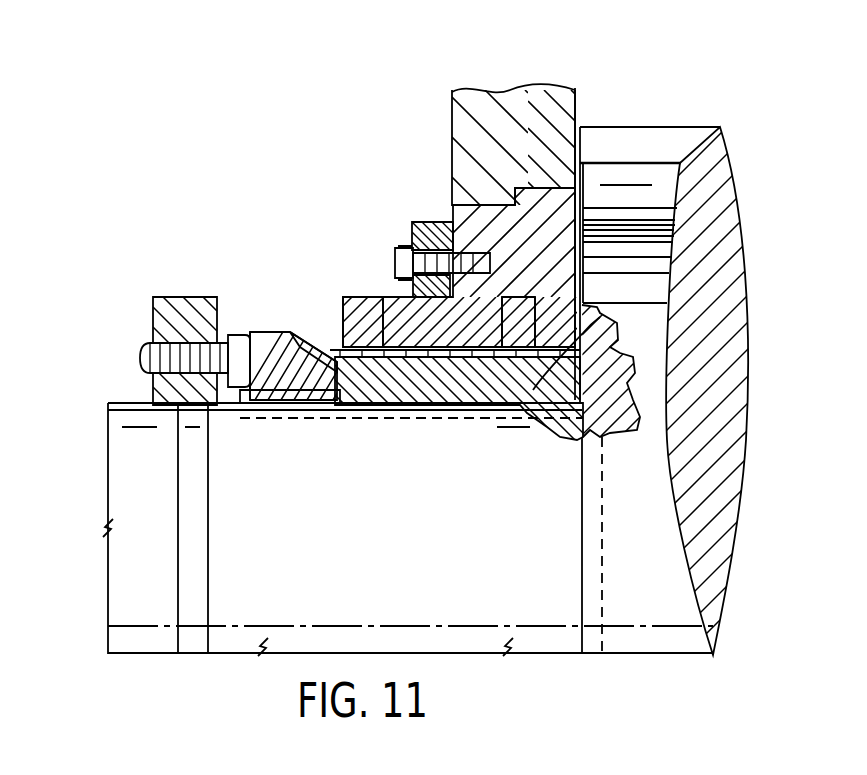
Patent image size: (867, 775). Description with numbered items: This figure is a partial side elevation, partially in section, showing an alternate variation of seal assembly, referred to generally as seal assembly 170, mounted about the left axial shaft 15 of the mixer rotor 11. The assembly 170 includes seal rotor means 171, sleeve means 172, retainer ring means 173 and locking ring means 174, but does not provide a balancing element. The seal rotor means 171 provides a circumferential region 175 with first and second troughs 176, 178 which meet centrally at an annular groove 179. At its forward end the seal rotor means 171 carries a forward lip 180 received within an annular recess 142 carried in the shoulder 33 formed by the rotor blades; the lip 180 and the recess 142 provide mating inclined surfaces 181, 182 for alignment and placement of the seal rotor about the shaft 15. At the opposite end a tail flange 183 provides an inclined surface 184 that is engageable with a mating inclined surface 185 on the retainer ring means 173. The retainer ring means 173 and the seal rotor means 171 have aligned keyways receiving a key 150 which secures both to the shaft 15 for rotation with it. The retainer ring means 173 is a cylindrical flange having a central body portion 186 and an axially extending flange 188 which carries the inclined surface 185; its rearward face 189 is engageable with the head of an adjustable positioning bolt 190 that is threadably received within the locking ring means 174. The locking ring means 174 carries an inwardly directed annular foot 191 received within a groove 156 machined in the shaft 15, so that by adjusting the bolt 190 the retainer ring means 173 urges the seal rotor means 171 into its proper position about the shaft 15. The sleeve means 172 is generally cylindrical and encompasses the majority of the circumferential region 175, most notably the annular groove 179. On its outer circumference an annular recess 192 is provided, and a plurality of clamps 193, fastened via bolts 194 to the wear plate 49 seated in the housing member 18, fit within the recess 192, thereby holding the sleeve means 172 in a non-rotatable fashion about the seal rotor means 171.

The rotor 11 is at (653, 609).
The left axial shaft 15 is at (337, 588).
The housing member 18 is at (460, 110).
The shoulder 33 is at (648, 158).
The wear plate 49 is at (528, 200).
The annular recess 142 is at (596, 446).
The key 150 is at (233, 407).
The groove 156 is at (190, 568).
The seal assembly 170 is at (290, 160).
The seal rotor means 171 is at (452, 408).
The sleeve means 172 is at (347, 292).
The retainer ring means 173 is at (252, 326).
The locking ring means 174 is at (152, 310).
The circumferential region 175 is at (576, 306).
The first trough 176 is at (510, 302).
The second trough 178 is at (383, 298).
The annular groove 179 is at (458, 360).
The forward lip 180 is at (590, 380).
The inclined surface 181 is at (612, 347).
The inclined surface 182 is at (557, 426).
The tail flange 183 is at (320, 390).
The inclined surface 184 is at (293, 333).
The inclined surface 185 is at (350, 395).
The central body portion 186 is at (287, 365).
The axially extending flange 188 is at (320, 357).
The rearward face 189 is at (243, 343).
The adjustable positioning bolt 190 is at (142, 358).
The annular foot 191 is at (180, 418).
The annular recess 192 is at (415, 250).
The clamps 193 is at (432, 222).
The bolts 194 is at (402, 248).